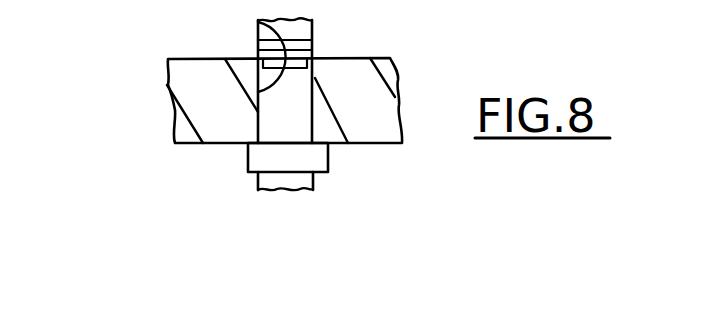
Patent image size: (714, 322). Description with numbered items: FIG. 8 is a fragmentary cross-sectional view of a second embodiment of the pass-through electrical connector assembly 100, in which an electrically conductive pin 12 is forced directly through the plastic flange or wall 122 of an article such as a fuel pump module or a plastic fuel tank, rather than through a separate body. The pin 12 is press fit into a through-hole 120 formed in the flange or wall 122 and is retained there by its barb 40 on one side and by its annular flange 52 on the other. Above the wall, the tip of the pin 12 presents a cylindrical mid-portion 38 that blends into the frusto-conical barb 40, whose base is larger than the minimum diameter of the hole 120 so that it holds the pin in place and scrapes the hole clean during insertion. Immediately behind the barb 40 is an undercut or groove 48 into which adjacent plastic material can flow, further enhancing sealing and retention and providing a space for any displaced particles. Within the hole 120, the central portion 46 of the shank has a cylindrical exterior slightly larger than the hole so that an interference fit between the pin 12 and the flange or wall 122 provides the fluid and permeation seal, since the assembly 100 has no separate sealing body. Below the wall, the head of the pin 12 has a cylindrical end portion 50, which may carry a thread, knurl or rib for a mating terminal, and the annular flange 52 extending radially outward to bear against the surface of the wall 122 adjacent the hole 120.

The connector pin 12 is at (237, 170).
The cylindrical mid-portion 38 is at (306, 24).
The barb 40 is at (307, 50).
The central portion 46 is at (272, 112).
The undercut or groove 48 is at (262, 26).
The cylindrical end portion 50 is at (297, 185).
The annular flange 52 is at (328, 157).
The pass-through electrical connector assembly 100 is at (430, 80).
The through-hole 120 is at (257, 45).
The flange or wall 122 is at (192, 135).